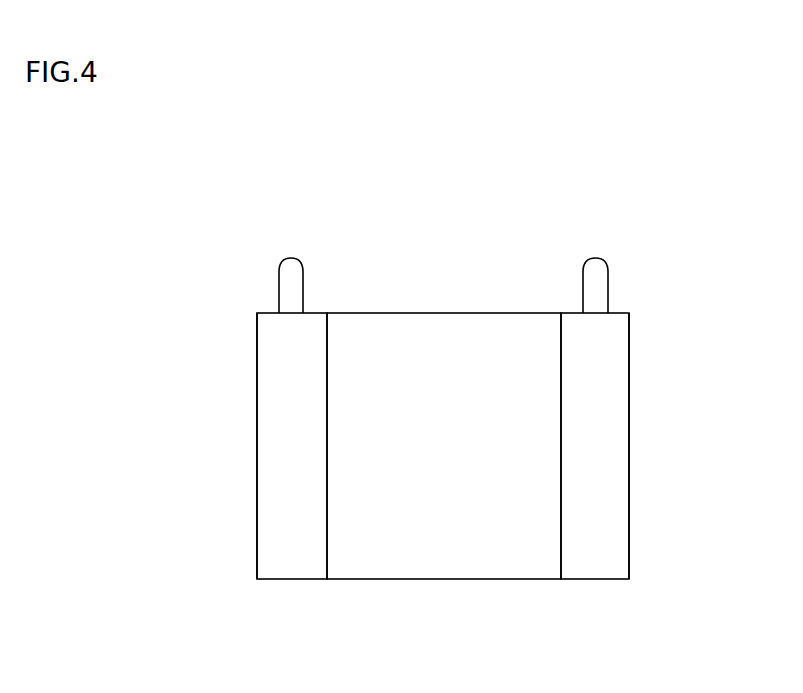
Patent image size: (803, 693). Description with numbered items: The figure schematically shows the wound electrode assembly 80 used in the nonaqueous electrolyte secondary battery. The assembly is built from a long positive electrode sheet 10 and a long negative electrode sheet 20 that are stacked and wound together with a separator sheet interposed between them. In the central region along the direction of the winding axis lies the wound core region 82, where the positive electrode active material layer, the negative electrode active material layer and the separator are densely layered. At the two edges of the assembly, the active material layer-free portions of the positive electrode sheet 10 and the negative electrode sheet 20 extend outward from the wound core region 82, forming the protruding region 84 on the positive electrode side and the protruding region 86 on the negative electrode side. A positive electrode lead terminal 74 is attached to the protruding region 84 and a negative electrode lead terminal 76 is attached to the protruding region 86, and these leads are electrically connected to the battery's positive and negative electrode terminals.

The wound electrode assembly 80 is at (202, 231).
The positive electrode lead terminal 74 is at (290, 266).
The negative electrode lead terminal 76 is at (596, 266).
The positive electrode sheet 10 is at (256, 447).
The negative electrode sheet 20 is at (630, 442).
The protruding region on the positive electrode side 84 is at (272, 527).
The protruding region on the negative electrode side 86 is at (618, 525).
The wound core region 82 is at (505, 570).